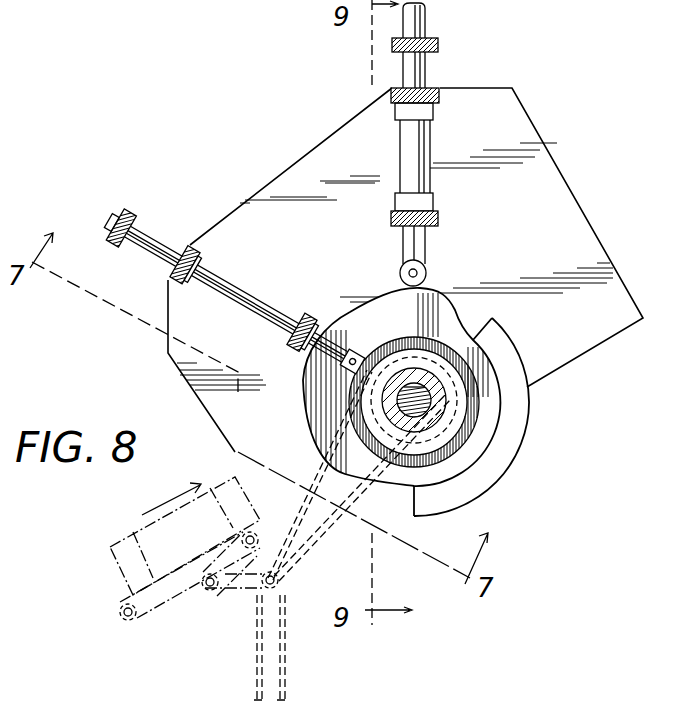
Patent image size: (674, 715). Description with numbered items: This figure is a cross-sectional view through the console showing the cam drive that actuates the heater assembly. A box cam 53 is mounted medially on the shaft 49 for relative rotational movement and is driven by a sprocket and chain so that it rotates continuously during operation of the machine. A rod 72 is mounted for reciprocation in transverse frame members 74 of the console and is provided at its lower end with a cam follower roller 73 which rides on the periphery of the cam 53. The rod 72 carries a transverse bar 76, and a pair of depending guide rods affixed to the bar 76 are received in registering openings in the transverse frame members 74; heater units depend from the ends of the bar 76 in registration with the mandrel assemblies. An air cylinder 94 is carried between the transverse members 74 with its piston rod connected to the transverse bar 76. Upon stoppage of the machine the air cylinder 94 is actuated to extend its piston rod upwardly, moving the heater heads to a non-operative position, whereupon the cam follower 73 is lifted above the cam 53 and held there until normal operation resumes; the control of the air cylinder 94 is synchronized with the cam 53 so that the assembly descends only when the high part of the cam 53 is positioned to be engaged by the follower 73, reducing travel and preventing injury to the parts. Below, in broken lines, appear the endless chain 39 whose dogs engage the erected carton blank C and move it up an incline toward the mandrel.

The rod 72 is at (422, 22).
The transverse bar 76 is at (440, 46).
The transverse frame members 74 is at (440, 90).
The air cylinder 94 is at (429, 134).
The cam follower roller 73 is at (425, 268).
The box cam 53 is at (410, 326).
The shaft 49 is at (432, 411).
The endless chain 39 is at (172, 598).
The carton blank C is at (137, 527).